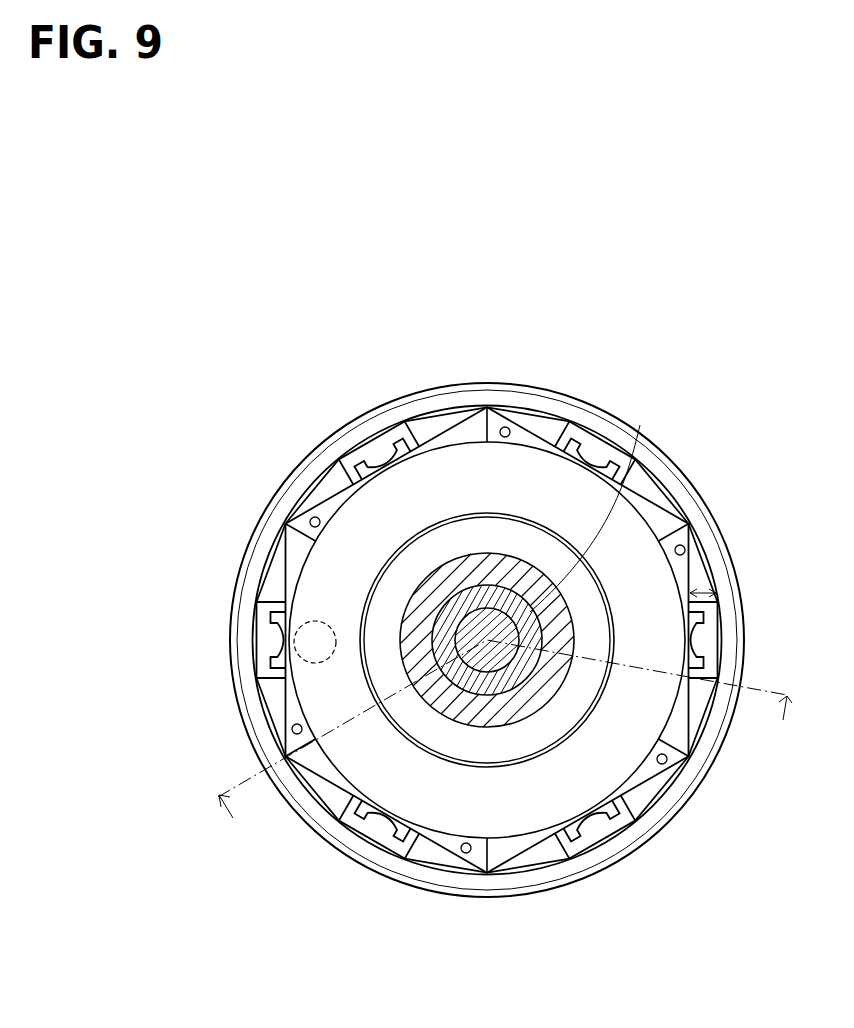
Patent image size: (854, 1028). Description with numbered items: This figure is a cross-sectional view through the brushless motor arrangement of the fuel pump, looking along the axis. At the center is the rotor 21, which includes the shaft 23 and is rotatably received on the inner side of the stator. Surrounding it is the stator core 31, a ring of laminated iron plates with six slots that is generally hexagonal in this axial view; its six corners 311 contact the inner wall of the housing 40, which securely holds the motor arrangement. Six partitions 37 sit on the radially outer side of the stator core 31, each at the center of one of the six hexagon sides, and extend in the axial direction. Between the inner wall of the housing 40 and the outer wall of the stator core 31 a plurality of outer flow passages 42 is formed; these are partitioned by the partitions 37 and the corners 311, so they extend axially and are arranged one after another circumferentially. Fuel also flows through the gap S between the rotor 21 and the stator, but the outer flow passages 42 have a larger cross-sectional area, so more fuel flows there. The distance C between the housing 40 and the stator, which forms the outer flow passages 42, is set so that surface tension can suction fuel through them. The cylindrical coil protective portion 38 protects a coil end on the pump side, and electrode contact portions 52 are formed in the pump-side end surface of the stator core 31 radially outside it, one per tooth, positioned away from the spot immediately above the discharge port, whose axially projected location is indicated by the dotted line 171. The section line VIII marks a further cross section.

The rotor 21 is at (430, 722).
The shaft 23 is at (657, 492).
The stator core 31 is at (489, 407).
The corners 311 is at (488, 425).
The partitions 37 is at (378, 447).
The coil protective portion 38 is at (507, 800).
The housing 40 is at (456, 387).
The outer flow passages 42 is at (428, 414).
The electrode contact portions 52 is at (508, 428).
The dotted line 171 is at (300, 626).
The gap S is at (448, 765).
The distance C is at (716, 592).
The section line VIII is at (508, 743).